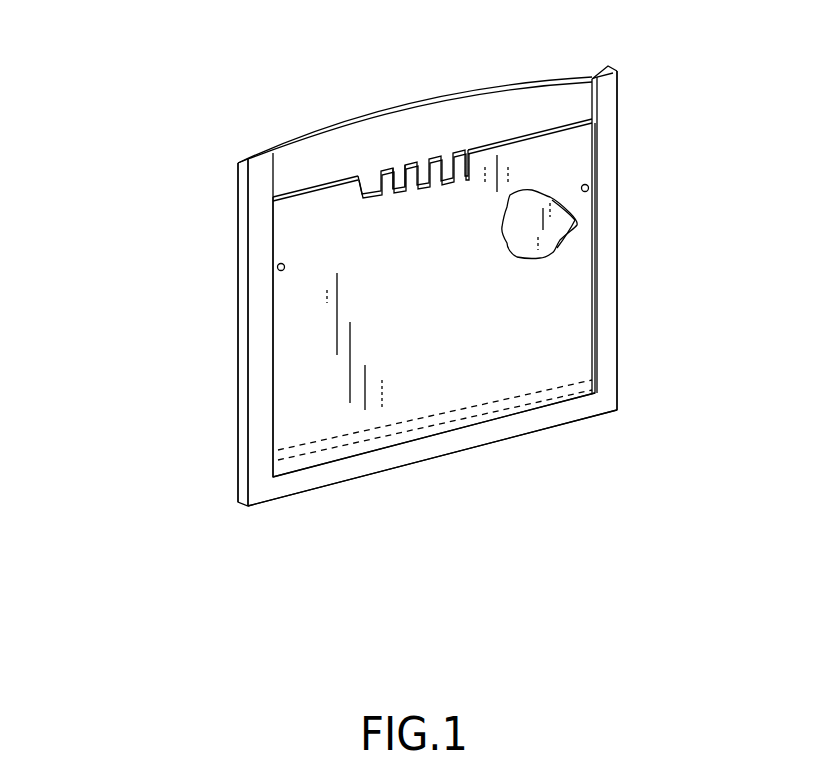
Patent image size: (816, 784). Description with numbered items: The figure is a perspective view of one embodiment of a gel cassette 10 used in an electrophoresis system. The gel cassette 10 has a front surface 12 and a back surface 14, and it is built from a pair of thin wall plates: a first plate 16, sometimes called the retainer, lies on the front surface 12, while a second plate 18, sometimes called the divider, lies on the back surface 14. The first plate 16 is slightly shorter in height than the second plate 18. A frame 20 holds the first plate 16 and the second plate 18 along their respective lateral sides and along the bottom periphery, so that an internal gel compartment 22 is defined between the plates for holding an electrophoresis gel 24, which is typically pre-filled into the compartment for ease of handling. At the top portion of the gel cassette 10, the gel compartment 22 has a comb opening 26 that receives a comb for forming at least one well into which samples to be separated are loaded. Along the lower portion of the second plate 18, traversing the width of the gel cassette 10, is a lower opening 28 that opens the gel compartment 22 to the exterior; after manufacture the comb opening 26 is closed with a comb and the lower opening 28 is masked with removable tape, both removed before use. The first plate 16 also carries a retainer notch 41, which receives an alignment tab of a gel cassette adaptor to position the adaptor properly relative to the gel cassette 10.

The gel cassette 10 is at (182, 322).
The front surface 12 is at (288, 323).
The back surface 14 is at (240, 232).
The first plate 16 is at (558, 285).
The second plate 18 is at (400, 128).
The frame 20 is at (260, 402).
The internal gel compartment 22 is at (560, 219).
The electrophoresis gel 24 is at (526, 200).
The comb opening 26 is at (405, 168).
The lower opening 28 is at (458, 413).
The retainer notch 41 is at (277, 268).